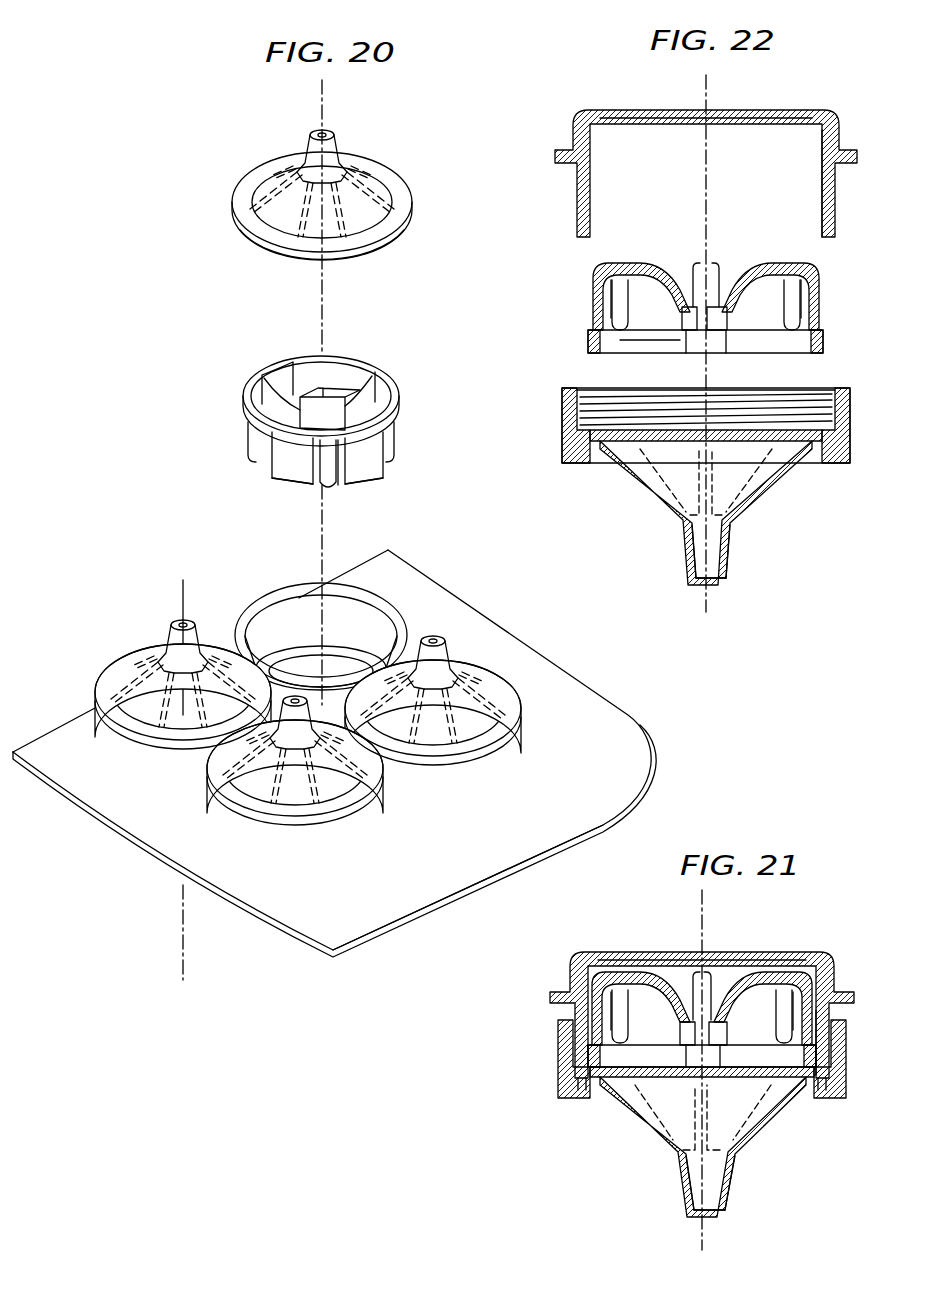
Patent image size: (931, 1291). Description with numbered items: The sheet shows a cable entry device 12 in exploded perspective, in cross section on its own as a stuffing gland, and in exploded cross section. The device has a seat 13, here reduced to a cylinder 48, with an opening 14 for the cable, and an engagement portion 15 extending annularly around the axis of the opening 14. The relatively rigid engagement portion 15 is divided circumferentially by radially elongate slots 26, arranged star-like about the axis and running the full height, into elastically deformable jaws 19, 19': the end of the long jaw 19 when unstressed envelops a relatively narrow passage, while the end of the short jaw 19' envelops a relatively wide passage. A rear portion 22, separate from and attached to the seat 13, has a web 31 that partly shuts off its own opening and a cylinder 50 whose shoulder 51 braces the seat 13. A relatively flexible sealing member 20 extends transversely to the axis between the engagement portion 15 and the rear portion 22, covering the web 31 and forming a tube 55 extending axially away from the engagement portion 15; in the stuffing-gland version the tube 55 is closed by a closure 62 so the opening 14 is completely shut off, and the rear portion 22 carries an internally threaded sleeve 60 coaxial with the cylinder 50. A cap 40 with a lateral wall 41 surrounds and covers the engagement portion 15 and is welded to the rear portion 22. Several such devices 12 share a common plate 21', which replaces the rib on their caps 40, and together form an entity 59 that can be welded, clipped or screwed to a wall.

In FIG. 20, the cable entry device 12 is at (100, 768).
In FIG. 21, the cable entry device 12 is at (578, 946).
In FIG. 20, the seat 13 is at (241, 401).
In FIG. 22, the seat 13 is at (826, 340).
In FIG. 21, the seat 13 is at (604, 1056).
In FIG. 22, the opening 14 is at (600, 346).
In FIG. 21, the opening 14 is at (626, 1102).
In FIG. 20, the engagement portion 15 is at (400, 460).
In FIG. 22, the engagement portion 15 is at (820, 280).
In FIG. 21, the long jaw 19 is at (646, 970).
In FIG. 21, the short jaw 19' is at (758, 970).
In FIG. 20, the sealing member 20 is at (282, 217).
In FIG. 22, the sealing member 20 is at (738, 482).
In FIG. 21, the sealing member 20 is at (740, 1135).
In FIG. 20, the common plate 21' is at (468, 913).
In FIG. 20, the rear portion 22 is at (412, 197).
In FIG. 22, the rear portion 22 is at (846, 467).
In FIG. 21, the rear portion 22 is at (846, 1102).
In FIG. 20, the radially elongate slots 26 is at (330, 478).
In FIG. 20, the web 31 is at (262, 195).
In FIG. 20, the cap 40 is at (395, 592).
In FIG. 22, the cap 40 is at (840, 112).
In FIG. 21, the cap 40 is at (838, 952).
In FIG. 20, the lateral wall 41 is at (103, 735).
In FIG. 22, the lateral wall 41 is at (840, 195).
In FIG. 21, the lateral wall 41 is at (846, 1030).
In FIG. 20, the cylinder 48 is at (272, 364).
In FIG. 22, the cylinder 48 is at (823, 352).
In FIG. 21, the cylinder 48 is at (590, 1056).
In FIG. 20, the cylinder 50 is at (382, 238).
In FIG. 22, the cylinder 50 is at (820, 466).
In FIG. 22, the shoulder 51 is at (585, 395).
In FIG. 20, the tube 55 is at (310, 135).
In FIG. 22, the tube 55 is at (686, 560).
In FIG. 21, the tube 55 is at (722, 1196).
In FIG. 20, the entity 59 is at (282, 945).
In FIG. 22, the sleeve 60 is at (562, 445).
In FIG. 21, the sleeve 60 is at (848, 1068).
In FIG. 22, the closure 62 is at (712, 586).
In FIG. 21, the closure 62 is at (697, 1222).